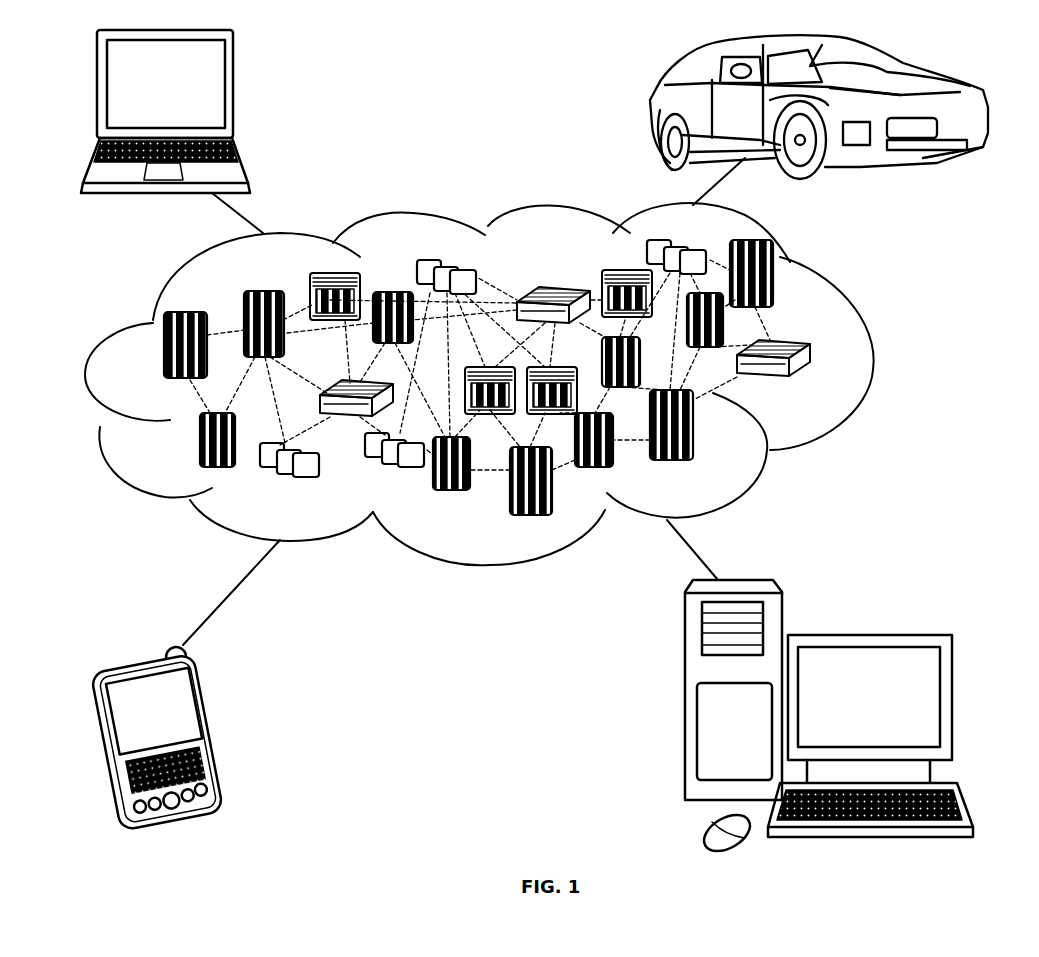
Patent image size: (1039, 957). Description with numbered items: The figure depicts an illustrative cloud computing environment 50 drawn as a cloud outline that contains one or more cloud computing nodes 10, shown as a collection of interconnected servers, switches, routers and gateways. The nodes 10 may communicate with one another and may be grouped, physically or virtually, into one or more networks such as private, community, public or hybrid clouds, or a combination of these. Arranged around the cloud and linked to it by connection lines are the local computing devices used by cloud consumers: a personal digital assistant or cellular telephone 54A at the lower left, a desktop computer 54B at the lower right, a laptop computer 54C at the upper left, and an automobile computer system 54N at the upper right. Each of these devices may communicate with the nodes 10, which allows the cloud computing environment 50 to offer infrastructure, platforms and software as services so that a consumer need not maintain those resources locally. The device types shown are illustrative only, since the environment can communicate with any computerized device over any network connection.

The cloud computing nodes 10 is at (812, 382).
The cloud computing environment 50 is at (868, 362).
The personal digital assistant (PDA) or cellular telephone 54A is at (220, 727).
The desktop computer 54B is at (866, 630).
The laptop computer 54C is at (235, 92).
The automobile computer system 54N is at (653, 103).